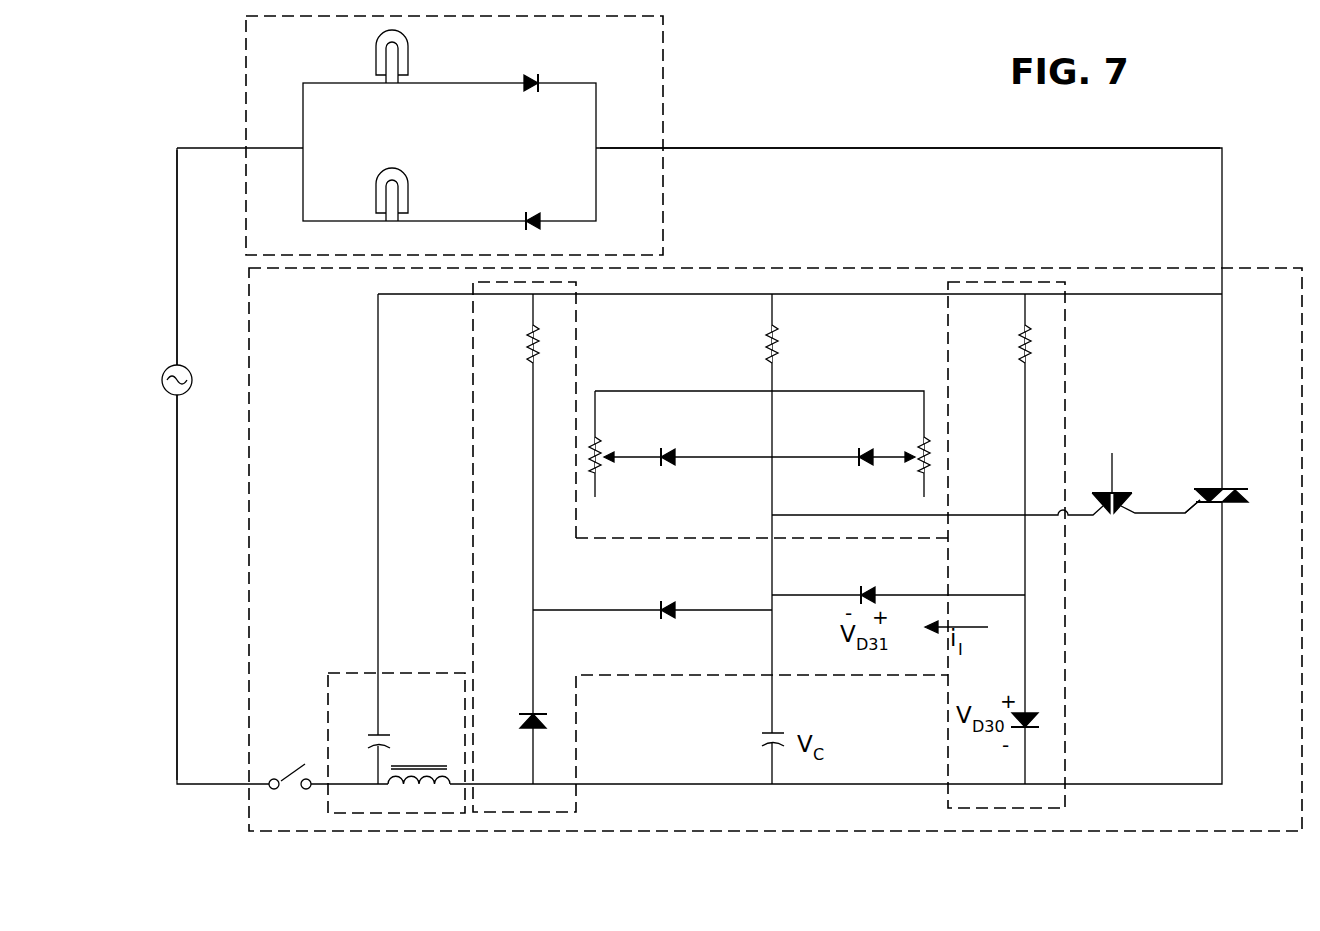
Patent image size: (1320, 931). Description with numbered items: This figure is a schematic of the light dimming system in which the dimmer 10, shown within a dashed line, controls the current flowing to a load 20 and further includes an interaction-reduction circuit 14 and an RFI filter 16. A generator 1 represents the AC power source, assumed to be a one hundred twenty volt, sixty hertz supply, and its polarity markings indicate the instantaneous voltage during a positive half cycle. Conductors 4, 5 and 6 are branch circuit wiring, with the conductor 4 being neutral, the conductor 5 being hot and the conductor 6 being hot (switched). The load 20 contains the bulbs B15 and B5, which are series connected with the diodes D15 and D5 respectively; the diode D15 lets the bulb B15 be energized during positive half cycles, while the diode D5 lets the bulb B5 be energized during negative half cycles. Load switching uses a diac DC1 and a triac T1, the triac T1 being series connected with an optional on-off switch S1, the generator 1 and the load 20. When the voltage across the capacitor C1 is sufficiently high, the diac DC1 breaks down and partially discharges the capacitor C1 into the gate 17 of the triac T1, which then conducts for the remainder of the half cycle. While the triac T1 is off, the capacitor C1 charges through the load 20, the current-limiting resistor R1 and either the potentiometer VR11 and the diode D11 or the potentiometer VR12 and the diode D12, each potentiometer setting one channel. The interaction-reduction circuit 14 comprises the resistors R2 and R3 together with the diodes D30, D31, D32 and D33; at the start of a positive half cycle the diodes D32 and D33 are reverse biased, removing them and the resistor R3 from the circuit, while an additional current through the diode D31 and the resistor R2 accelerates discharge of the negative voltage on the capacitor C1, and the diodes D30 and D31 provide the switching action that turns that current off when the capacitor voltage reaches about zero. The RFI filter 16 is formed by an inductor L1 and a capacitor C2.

The load 20 is at (246, 75).
The bulb B15 is at (376, 51).
The bulb B5 is at (390, 172).
The diode D15 is at (532, 76).
The diode D5 is at (527, 212).
The conductor 6 is at (915, 146).
The conductor 4 is at (176, 219).
The conductor 5 is at (176, 494).
The generator 1 is at (163, 381).
The dimmer 10 is at (249, 528).
The interaction-reduction circuit 14 is at (473, 464).
The RFI filter 16 is at (348, 673).
The current-limiting resistor R1 is at (767, 351).
The resistor R2 is at (1019, 351).
The resistor R3 is at (528, 351).
The potentiometer VR11 is at (917, 450).
The potentiometer VR12 is at (592, 449).
The diode D11 is at (865, 470).
The diode D12 is at (668, 470).
The diode D30 is at (1038, 722).
The diode D31 is at (862, 586).
The diode D32 is at (667, 602).
The diode D33 is at (546, 722).
The capacitor C1 is at (766, 731).
The capacitor C2 is at (374, 736).
The inductor L1 is at (420, 765).
The on-off switch S1 is at (287, 772).
The diac DC1 is at (1112, 516).
The triac T1 is at (1233, 503).
The gate 17 is at (1204, 509).